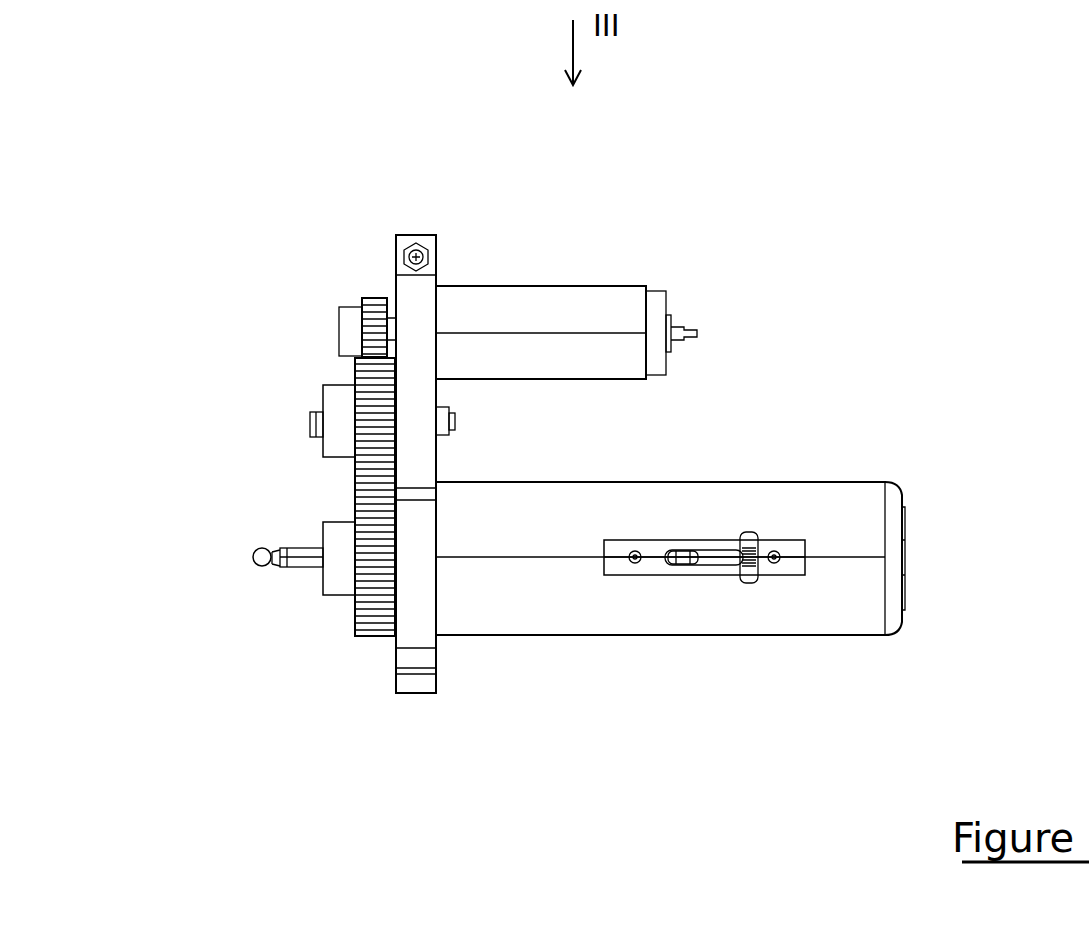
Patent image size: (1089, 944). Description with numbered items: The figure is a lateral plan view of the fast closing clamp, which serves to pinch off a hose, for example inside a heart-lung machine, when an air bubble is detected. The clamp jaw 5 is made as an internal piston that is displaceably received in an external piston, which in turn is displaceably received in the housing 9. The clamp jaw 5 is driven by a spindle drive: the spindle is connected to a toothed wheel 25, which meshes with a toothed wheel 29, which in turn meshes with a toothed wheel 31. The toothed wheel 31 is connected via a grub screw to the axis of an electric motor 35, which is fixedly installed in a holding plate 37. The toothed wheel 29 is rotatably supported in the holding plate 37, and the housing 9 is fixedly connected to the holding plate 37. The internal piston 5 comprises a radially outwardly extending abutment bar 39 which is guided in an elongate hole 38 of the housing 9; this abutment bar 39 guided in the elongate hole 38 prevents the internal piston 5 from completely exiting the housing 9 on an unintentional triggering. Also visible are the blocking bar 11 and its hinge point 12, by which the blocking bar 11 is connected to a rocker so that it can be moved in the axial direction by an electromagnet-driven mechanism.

The clamp jaw 5 is at (908, 553).
The housing 9 is at (757, 480).
The blocking bar 11 is at (304, 560).
The hinge point 12 is at (256, 564).
The toothed wheel 25 is at (352, 625).
The toothed wheel 29 is at (355, 478).
The toothed wheel 31 is at (372, 300).
The electric motor 35 is at (560, 304).
The holding plate 37 is at (425, 458).
The elongate hole 38 is at (706, 565).
The abutment bar 39 is at (683, 564).